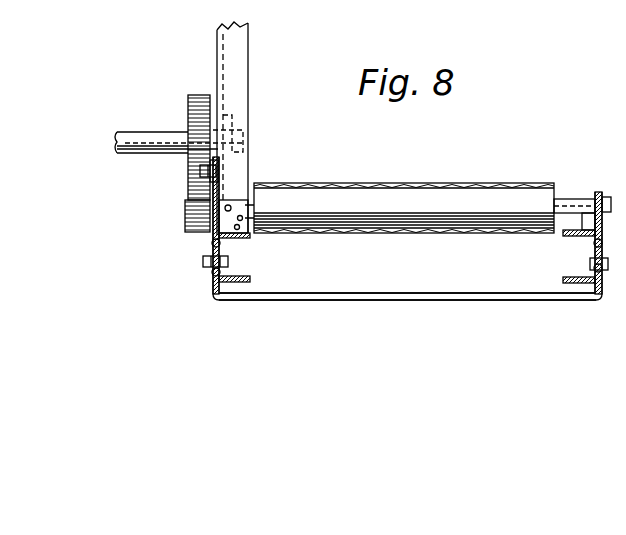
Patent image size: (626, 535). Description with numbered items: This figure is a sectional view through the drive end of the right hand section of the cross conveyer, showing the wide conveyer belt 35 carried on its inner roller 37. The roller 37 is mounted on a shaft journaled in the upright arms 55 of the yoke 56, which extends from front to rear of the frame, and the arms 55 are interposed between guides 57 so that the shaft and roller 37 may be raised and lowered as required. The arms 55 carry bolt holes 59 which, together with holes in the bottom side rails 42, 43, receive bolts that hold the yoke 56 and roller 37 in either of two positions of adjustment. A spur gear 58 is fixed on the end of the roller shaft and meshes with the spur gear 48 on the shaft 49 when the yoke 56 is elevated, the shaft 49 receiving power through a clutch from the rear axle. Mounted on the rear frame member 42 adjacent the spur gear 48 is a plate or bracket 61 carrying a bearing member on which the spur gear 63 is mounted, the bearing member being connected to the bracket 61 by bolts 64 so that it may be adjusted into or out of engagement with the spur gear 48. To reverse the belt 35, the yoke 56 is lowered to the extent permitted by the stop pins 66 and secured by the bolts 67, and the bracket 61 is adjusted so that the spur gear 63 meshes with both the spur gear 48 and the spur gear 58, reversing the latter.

The conveyer belt 35 is at (413, 183).
The roller 37 is at (347, 197).
The bottom side rail 42 is at (251, 279).
The bottom side rail 43 is at (585, 278).
The spur gear 48 is at (197, 95).
The shaft 49 is at (136, 131).
The upright arm 55 is at (212, 292).
The yoke 56 is at (397, 300).
The guide 57 is at (212, 243).
The spur gear 58 is at (186, 230).
The bolt hole 59 is at (594, 252).
The plate or bracket 61 is at (218, 196).
The spur gear 63 is at (198, 171).
The bolt 64 is at (205, 185).
The stop pin 66 is at (255, 206).
The bolt 67 is at (229, 262).